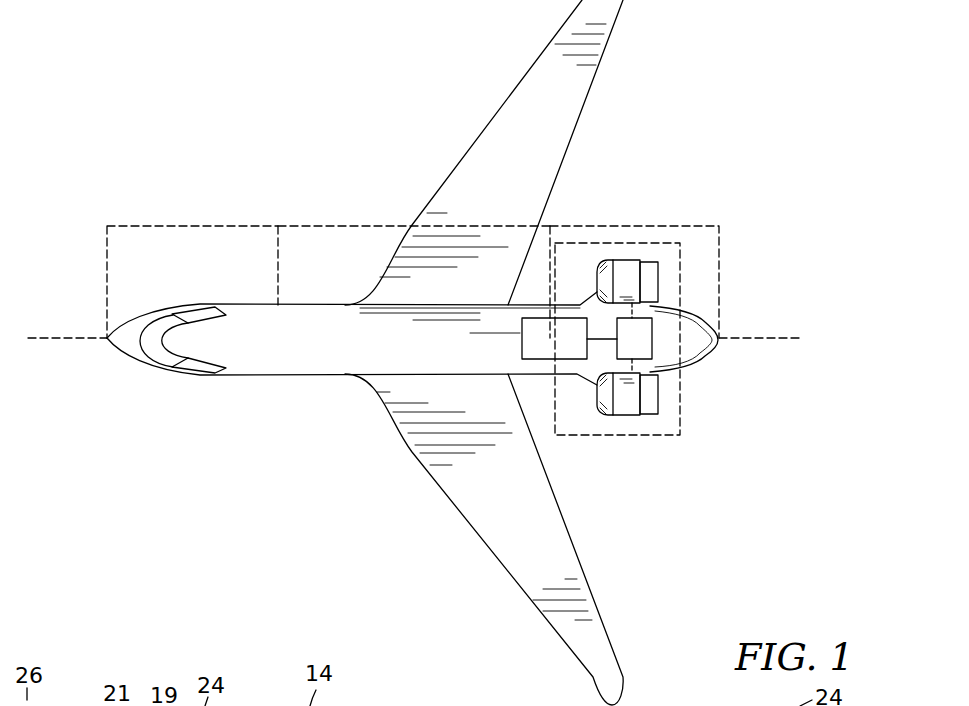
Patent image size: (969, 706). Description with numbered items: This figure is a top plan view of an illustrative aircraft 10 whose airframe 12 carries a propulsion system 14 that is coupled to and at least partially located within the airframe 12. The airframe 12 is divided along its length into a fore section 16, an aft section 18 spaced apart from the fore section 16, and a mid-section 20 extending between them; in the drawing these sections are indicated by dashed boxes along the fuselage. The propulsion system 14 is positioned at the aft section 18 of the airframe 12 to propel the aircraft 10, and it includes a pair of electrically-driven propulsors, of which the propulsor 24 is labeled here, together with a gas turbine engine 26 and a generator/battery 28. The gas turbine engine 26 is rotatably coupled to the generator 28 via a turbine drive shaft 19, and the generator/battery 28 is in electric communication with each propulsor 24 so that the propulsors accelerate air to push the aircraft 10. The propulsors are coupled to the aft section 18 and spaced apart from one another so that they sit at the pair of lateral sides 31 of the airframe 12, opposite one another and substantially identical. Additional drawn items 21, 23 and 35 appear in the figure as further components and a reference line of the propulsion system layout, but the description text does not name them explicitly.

The aircraft 10 is at (124, 91).
The airframe 12 is at (135, 416).
The propulsion system 14 is at (699, 277).
The fore section 16 is at (197, 226).
The aft section 18 is at (665, 242).
The turbine drive shaft 19 is at (600, 340).
The mid-section 20 is at (360, 226).
The transmission shaft 21 is at (592, 340).
The gearbox 23 is at (613, 318).
The electrically-driven propulsor 24 is at (657, 262).
The gas turbine engine 26 is at (535, 307).
The generator/battery 28 is at (653, 340).
The lateral sides 31 is at (256, 303).
The longitudinal centerline 35 is at (789, 326).